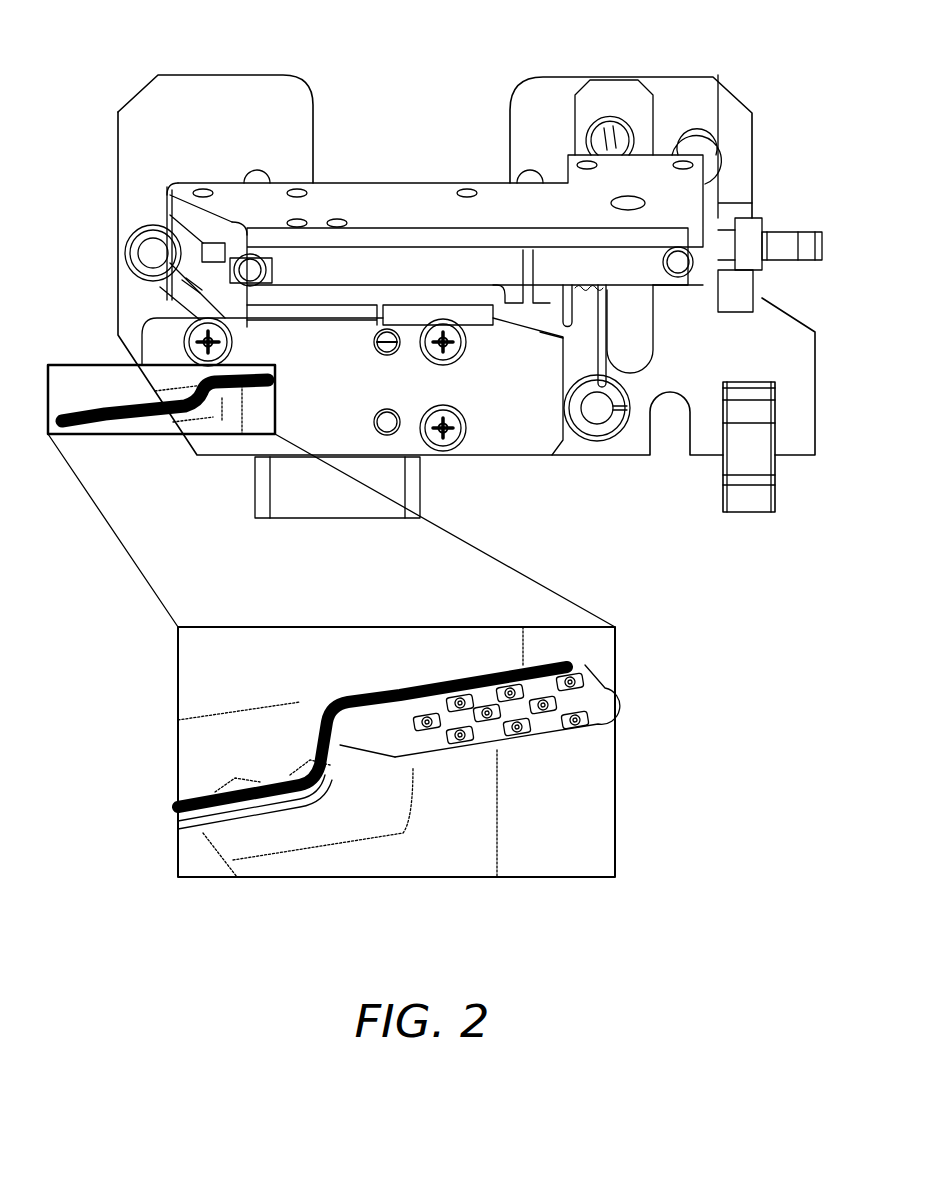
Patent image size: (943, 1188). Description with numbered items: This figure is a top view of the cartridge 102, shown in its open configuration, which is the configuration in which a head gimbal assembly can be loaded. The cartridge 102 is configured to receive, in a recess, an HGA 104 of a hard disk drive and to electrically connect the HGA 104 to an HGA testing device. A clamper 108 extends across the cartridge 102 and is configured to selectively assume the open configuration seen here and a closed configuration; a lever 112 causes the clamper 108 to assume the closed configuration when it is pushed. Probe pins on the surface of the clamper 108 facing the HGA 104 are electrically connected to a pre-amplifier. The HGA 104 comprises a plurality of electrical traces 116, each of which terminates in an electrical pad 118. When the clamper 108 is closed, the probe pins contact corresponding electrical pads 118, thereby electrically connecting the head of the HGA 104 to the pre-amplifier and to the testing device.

The cartridge 102 is at (88, 72).
The HGA 104 is at (143, 417).
The clamper 108 is at (381, 198).
The lever 112 is at (775, 495).
The electrical traces 116 is at (382, 700).
The electrical pad 118 is at (570, 680).